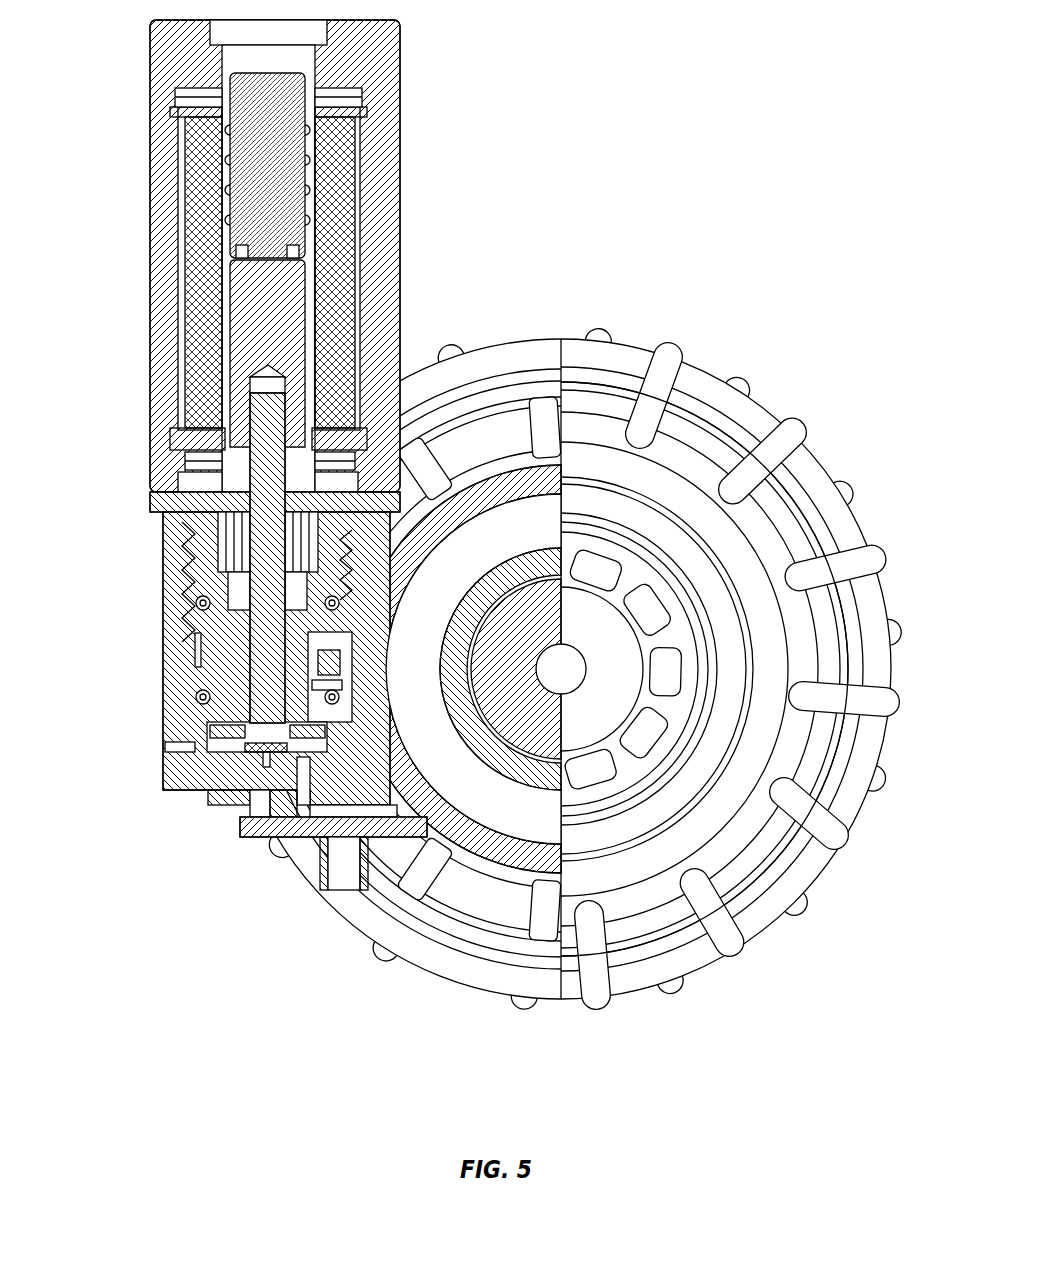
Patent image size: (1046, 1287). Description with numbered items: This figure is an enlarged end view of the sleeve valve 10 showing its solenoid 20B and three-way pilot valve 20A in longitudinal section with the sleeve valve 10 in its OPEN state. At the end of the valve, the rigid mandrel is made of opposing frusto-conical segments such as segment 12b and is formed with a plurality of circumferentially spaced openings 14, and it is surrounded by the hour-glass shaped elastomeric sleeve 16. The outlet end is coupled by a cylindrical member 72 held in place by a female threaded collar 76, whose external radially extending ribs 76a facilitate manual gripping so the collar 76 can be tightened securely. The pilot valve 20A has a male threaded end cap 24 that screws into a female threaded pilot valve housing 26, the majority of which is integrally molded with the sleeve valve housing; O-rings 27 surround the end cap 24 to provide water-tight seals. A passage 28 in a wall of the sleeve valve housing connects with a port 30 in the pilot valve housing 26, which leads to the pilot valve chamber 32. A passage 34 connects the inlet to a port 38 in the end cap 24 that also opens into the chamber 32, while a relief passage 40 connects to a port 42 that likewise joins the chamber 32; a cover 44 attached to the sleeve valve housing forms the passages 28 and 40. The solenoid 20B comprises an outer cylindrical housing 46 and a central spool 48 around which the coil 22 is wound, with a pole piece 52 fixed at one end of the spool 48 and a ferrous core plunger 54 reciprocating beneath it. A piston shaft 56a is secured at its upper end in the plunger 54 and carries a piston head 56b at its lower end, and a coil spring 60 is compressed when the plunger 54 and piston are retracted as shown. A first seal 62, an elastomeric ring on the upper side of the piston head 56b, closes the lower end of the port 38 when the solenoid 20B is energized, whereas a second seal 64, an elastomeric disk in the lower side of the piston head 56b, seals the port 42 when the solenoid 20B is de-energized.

The sleeve valve 10 is at (585, 659).
The frusto-conical segment 12b is at (633, 578).
The openings 14 is at (657, 615).
The elastomeric sleeve 16 is at (698, 674).
The three-way pilot valve 20A is at (247, 698).
The non-latching solenoid 20B is at (303, 264).
The coil 22 is at (340, 178).
The end cap 24 is at (190, 625).
The pilot valve housing 26 is at (165, 690).
The O-rings 27 is at (200, 600).
The passage 28 is at (393, 770).
The port 30 is at (290, 832).
The pilot valve chamber 32 is at (248, 770).
The passage 34 is at (340, 650).
The port 38 is at (320, 680).
The relief passage 40 is at (300, 806).
The port 42 is at (262, 795).
The cover 44 is at (300, 856).
The housing 46 is at (400, 107).
The spool 48 is at (320, 343).
The pole piece 52 is at (303, 77).
The plunger 54 is at (297, 326).
The piston shaft 56a is at (253, 415).
The piston head 56b is at (225, 757).
The coil spring 60 is at (178, 494).
The first seal 62 is at (178, 745).
The second seal 64 is at (263, 737).
The cylindrical member 72 is at (720, 736).
The collar 76 is at (700, 825).
The ribs 76a is at (870, 560).